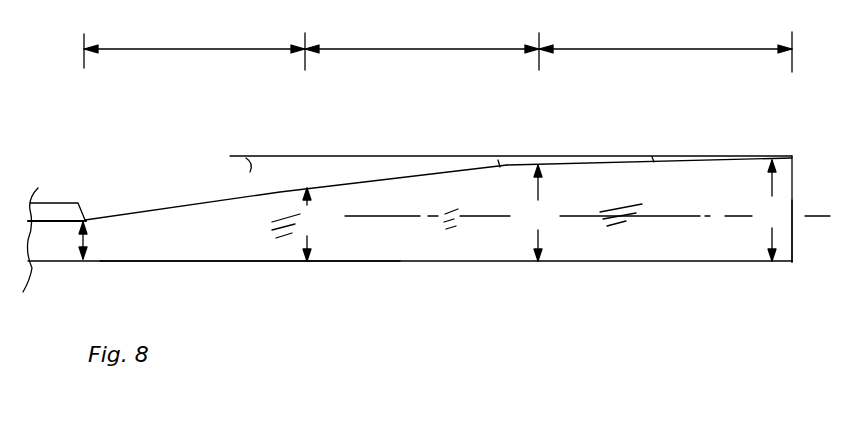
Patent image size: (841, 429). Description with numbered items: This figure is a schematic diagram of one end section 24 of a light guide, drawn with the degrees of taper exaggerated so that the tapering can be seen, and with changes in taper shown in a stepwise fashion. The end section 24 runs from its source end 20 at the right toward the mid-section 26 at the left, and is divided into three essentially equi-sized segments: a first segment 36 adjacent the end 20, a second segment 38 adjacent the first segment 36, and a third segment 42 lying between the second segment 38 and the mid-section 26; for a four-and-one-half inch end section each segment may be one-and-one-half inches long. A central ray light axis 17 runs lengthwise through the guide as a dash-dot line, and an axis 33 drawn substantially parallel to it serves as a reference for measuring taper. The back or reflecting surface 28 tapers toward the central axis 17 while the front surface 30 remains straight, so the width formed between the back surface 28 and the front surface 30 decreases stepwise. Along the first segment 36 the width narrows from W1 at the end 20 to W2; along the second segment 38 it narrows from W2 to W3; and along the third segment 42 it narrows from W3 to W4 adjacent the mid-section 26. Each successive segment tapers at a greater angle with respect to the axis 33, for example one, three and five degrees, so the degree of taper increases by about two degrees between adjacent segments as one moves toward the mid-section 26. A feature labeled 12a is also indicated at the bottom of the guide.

The third segment 42 is at (188, 49).
The second segment 38 is at (405, 49).
The first segment 36 is at (645, 49).
The axis 33 is at (358, 156).
The mid-section 26 is at (40, 203).
The back surface 28 is at (165, 210).
The central ray light axis 17 is at (604, 216).
The front surface 30 is at (255, 262).
The end section 24 is at (461, 281).
The body portion 12a is at (541, 281).
The end 20 is at (794, 222).
The width W1 is at (767, 210).
The width W2 is at (538, 213).
The width W3 is at (301, 224).
The width W4 is at (85, 238).